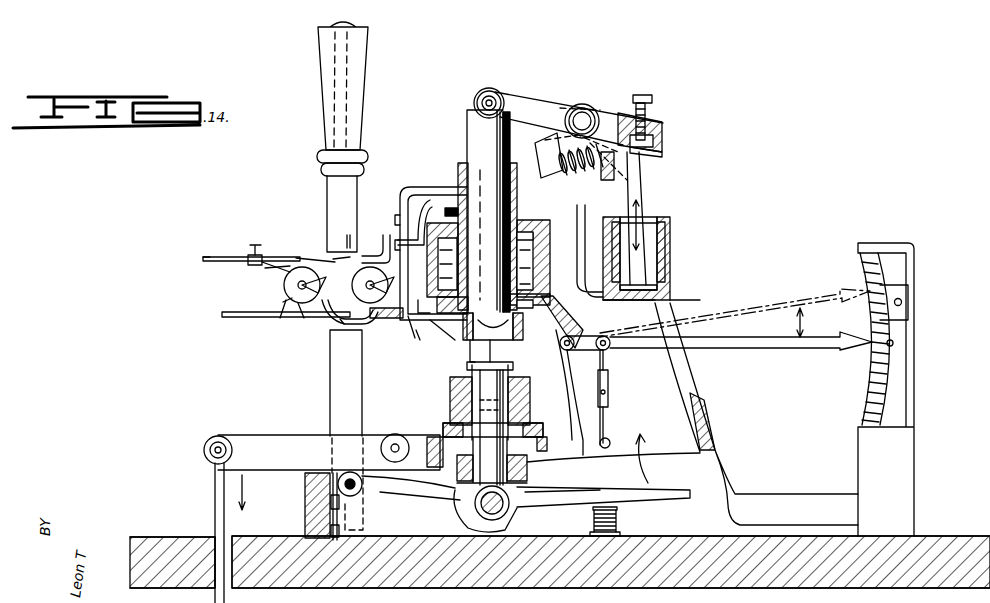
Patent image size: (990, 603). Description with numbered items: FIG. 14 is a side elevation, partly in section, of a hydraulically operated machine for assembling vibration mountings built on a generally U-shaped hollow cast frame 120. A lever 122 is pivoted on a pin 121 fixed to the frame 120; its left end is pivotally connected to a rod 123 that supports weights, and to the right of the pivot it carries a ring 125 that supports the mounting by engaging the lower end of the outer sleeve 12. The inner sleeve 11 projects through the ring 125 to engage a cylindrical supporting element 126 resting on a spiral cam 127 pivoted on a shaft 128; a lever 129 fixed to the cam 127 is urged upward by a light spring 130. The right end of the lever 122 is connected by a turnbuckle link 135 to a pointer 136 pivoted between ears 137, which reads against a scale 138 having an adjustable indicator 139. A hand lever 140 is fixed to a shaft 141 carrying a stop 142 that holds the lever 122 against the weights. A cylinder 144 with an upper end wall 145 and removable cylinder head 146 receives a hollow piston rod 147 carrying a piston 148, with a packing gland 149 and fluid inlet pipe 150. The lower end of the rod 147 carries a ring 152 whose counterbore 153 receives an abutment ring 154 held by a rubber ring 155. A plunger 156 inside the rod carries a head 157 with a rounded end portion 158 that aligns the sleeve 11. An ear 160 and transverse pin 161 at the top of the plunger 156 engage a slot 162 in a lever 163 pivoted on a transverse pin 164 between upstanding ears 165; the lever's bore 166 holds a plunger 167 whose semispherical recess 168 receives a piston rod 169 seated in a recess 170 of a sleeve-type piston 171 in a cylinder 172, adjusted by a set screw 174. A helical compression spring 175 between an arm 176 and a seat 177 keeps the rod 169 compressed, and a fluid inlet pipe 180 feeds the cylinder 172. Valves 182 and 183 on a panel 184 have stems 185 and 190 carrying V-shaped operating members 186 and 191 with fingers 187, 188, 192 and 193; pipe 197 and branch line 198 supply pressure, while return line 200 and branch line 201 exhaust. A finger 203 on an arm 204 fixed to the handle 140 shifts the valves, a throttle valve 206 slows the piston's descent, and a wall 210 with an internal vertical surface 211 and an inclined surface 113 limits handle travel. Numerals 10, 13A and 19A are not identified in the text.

The bearing sleeve 10 is at (450, 392).
The inner sleeve 11 is at (505, 362).
The outer sleeve 12 is at (514, 392).
The frame 13A is at (574, 362).
The inclined surface 113 is at (318, 478).
The frame 120 is at (712, 410).
The pin 121 is at (397, 434).
The lever 122 is at (298, 432).
The rod 123 is at (226, 528).
The ring 125 is at (532, 422).
The cylindrical supporting element 126 is at (462, 492).
The spiral cam 127 is at (510, 345).
The shaft 128 is at (470, 520).
The lever 129 is at (568, 480).
The light spring 130 is at (630, 520).
The turnbuckle link 135 is at (609, 388).
The pointer 136 is at (720, 348).
The ears 137 is at (560, 338).
The scale 138 is at (860, 368).
The adjustable indicator 139 is at (905, 292).
The hand lever 140 is at (330, 358).
The shaft 141 is at (364, 490).
The stop 142 is at (306, 482).
The cylinder 144 is at (545, 243).
The upper end wall 145 is at (445, 222).
The cylinder head 146 is at (455, 318).
The hollow piston rod 147 is at (462, 160).
The piston 148 is at (548, 232).
The packing gland 149 is at (462, 186).
The fluid inlet pipe 150 is at (440, 214).
The ring 152 is at (455, 330).
The counterbore 153 is at (460, 340).
The abutment ring 154 is at (462, 350).
The ring 155 is at (520, 332).
The plunger 156 is at (470, 126).
The head 157 is at (540, 278).
The rounded end portion 158 is at (470, 356).
The ear 160 is at (474, 96).
The transverse pin 161 is at (489, 92).
The slot 162 is at (505, 96).
The lever 163 is at (548, 104).
The transverse pin 164 is at (584, 112).
The upstanding ears 165 is at (588, 108).
The cylindrical bore 166 is at (664, 122).
The plunger 167 is at (654, 138).
The semispherical recess 168 is at (662, 155).
The piston rod 169 is at (650, 188).
The semispherical recess 170 is at (670, 278).
The sleeve-type piston 171 is at (670, 250).
The cylinder 172 is at (670, 228).
The set screw 174 is at (655, 104).
The helical compression spring 175 is at (585, 175).
The arm 176 is at (538, 150).
The seat 177 is at (614, 170).
The fluid inlet pipe 180 is at (608, 305).
The valve 182 is at (370, 330).
The valve 183 is at (284, 310).
The panel 184 is at (272, 284).
The stem 185 is at (306, 310).
The V-shaped operating member 186 is at (300, 268).
The finger 187 is at (290, 265).
The finger 188 is at (312, 262).
The stem 190 is at (358, 326).
The V-shaped operating member 191 is at (352, 288).
The finger 192 is at (358, 256).
The finger 193 is at (391, 315).
The pipe 197 is at (212, 266).
The branch line 198 is at (255, 265).
The exhaust or return line 200 is at (250, 322).
The branch line 201 is at (282, 301).
The finger 203 is at (412, 258).
The arm 204 is at (412, 243).
The throttle or speed control valve 206 is at (250, 250).
The wall 210 is at (328, 510).
The internal vertical surface 211 is at (328, 532).
The pipe 19A is at (410, 204).